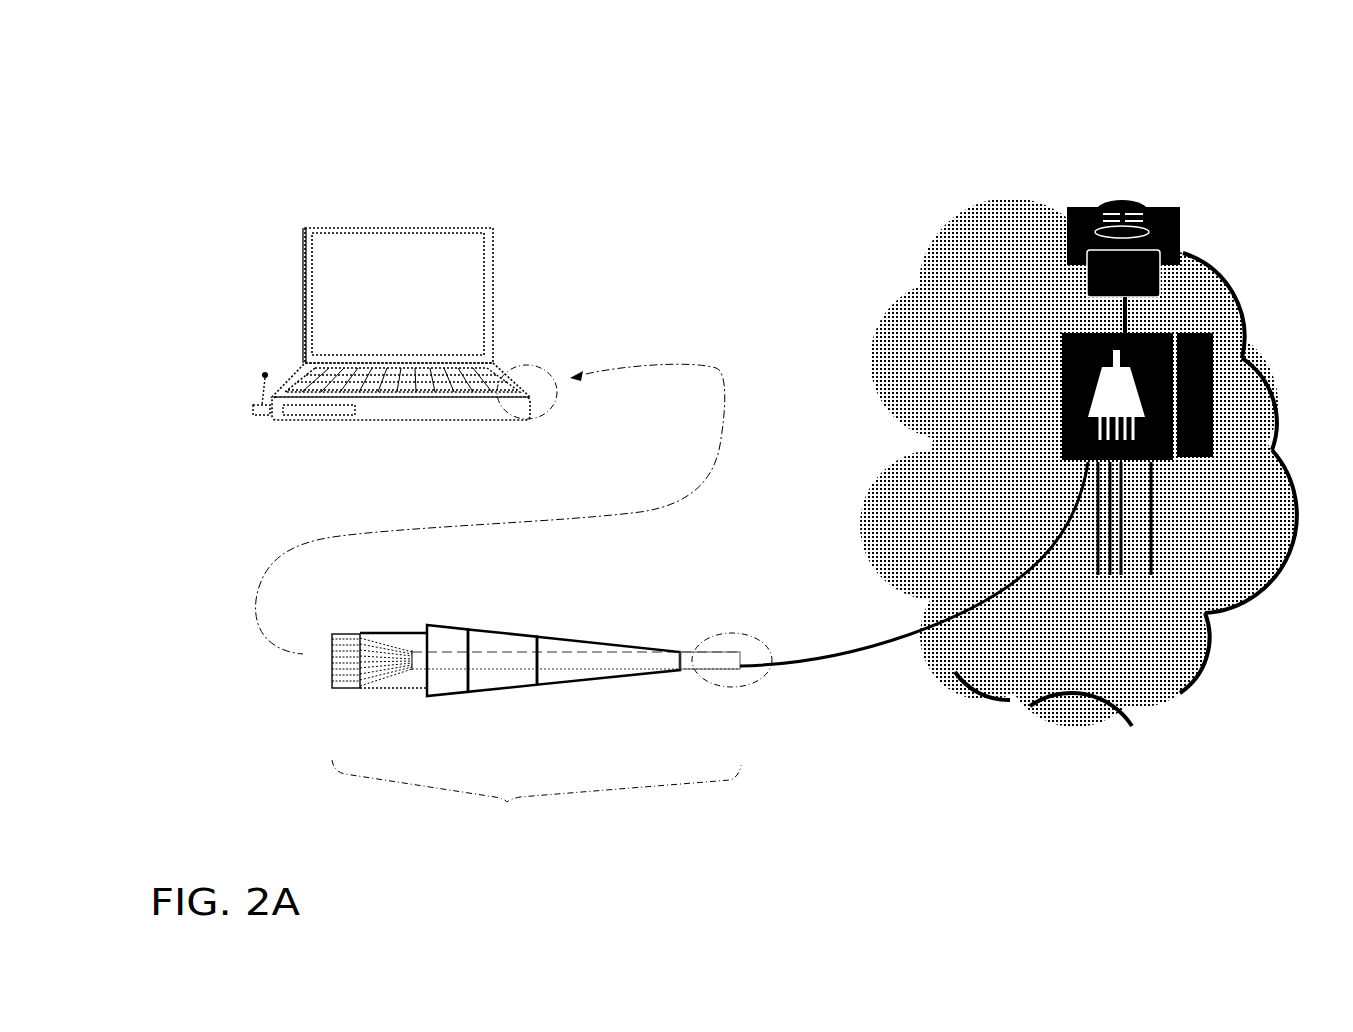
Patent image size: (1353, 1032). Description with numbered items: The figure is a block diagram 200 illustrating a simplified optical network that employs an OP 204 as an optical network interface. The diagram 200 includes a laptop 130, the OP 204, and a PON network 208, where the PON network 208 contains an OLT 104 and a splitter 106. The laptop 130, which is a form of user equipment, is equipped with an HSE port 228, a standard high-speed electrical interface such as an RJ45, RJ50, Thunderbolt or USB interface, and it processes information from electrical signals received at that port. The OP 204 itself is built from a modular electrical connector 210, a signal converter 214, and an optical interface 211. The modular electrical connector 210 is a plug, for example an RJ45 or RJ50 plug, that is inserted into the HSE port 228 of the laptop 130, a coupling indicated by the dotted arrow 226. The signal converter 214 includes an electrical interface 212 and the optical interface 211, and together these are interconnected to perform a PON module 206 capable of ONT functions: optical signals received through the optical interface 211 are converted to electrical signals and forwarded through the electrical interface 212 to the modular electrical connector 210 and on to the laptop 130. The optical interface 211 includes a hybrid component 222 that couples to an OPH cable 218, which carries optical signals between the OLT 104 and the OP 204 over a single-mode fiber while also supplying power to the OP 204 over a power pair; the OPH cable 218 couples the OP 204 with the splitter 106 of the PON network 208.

The block diagram 200 is at (287, 84).
The laptop 130 is at (412, 300).
The HSE port 228 is at (510, 365).
The dotted arrow 226 is at (670, 365).
The OP 204 is at (536, 800).
The modular electrical connector 210 is at (373, 632).
The electrical interface 212 is at (438, 680).
The signal converter 214 is at (490, 680).
The optical interface 211 is at (541, 680).
The hybrid component 222 is at (717, 628).
The OPH cable 218 is at (856, 654).
The PON module 206 is at (661, 689).
The PON network 208 is at (880, 418).
The OLT 104 is at (1122, 200).
The splitter 106 is at (1133, 410).